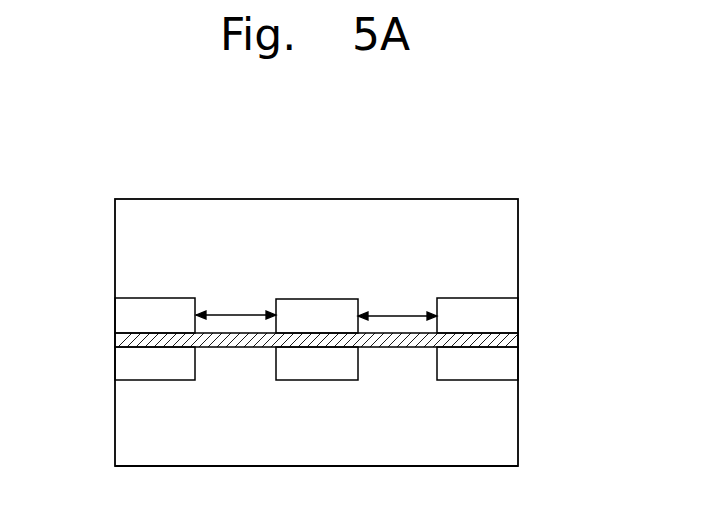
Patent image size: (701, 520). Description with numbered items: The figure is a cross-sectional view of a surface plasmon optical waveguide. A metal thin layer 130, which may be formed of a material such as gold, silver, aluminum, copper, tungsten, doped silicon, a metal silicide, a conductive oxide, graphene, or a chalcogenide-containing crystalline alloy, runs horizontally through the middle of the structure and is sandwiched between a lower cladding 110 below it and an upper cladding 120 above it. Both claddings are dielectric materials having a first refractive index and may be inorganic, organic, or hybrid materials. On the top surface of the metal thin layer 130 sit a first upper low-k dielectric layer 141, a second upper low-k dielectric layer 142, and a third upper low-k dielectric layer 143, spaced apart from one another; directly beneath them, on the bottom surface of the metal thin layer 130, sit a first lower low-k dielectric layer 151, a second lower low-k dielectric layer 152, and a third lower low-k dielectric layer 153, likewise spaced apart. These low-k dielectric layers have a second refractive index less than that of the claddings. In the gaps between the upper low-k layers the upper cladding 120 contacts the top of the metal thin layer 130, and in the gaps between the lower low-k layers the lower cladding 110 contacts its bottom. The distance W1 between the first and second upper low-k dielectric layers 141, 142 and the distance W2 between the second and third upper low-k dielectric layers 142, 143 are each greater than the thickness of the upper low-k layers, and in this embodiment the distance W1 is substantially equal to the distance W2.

The lower cladding 110 is at (507, 412).
The upper cladding 120 is at (507, 245).
The metal thin layer 130 is at (507, 342).
The first upper low-k dielectric layer 141 is at (128, 318).
The second upper low-k dielectric layer 142 is at (317, 309).
The third upper low-k dielectric layer 143 is at (507, 318).
The first lower low-k dielectric layer 151 is at (128, 364).
The second lower low-k dielectric layer 152 is at (317, 374).
The third lower low-k dielectric layer 153 is at (507, 366).
The distance between first and second upper low-k dielectric layers W1 is at (236, 304).
The distance between second and third upper low-k dielectric layers W2 is at (397, 305).